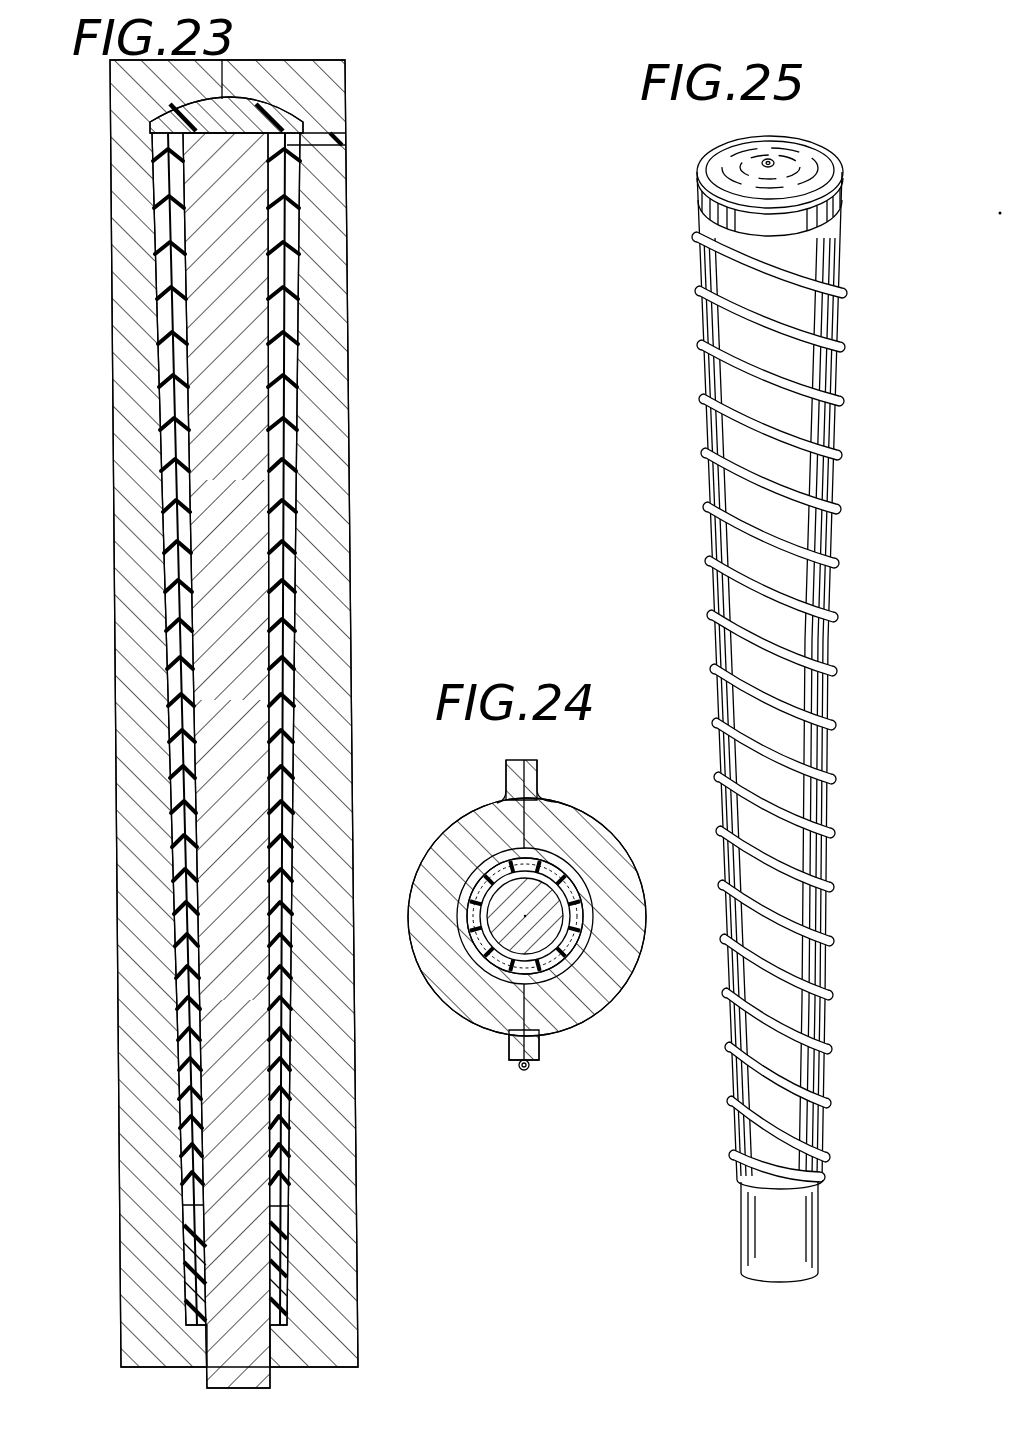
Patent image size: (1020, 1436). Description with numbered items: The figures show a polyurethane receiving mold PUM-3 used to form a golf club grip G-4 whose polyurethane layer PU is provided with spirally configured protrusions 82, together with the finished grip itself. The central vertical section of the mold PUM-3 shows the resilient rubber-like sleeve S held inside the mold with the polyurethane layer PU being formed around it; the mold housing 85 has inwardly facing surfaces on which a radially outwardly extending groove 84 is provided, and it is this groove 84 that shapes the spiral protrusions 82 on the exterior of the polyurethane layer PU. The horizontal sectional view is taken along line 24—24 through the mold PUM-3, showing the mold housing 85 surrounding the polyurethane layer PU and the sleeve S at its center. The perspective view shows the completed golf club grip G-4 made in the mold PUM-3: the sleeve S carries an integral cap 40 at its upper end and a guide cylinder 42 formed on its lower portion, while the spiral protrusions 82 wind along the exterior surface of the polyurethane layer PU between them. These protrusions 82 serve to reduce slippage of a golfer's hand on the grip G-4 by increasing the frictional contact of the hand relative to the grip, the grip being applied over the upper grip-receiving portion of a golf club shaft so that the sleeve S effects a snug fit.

In FIG. 23, the mold PUM-3 is at (120, 667).
In FIG. 24, the mold PUM-3 is at (576, 1015).
In FIG. 23, the sleeve S is at (273, 231).
In FIG. 23, the groove 84 is at (306, 305).
In FIG. 23, the mold housing 85 is at (340, 365).
In FIG. 24, the mold housing 85 is at (478, 816).
In FIG. 23, the polyurethane layer PU is at (296, 570).
In FIG. 24, the polyurethane layer PU is at (567, 868).
In FIG. 23, the line 24— 24 is at (108, 517).
In FIG. 25, the cap 40 is at (835, 167).
In FIG. 25, the spirally configured protrusions 82 is at (838, 331).
In FIG. 25, the golf club grip G-4 is at (698, 410).
In FIG. 25, the guide cylinder 42 is at (742, 1215).